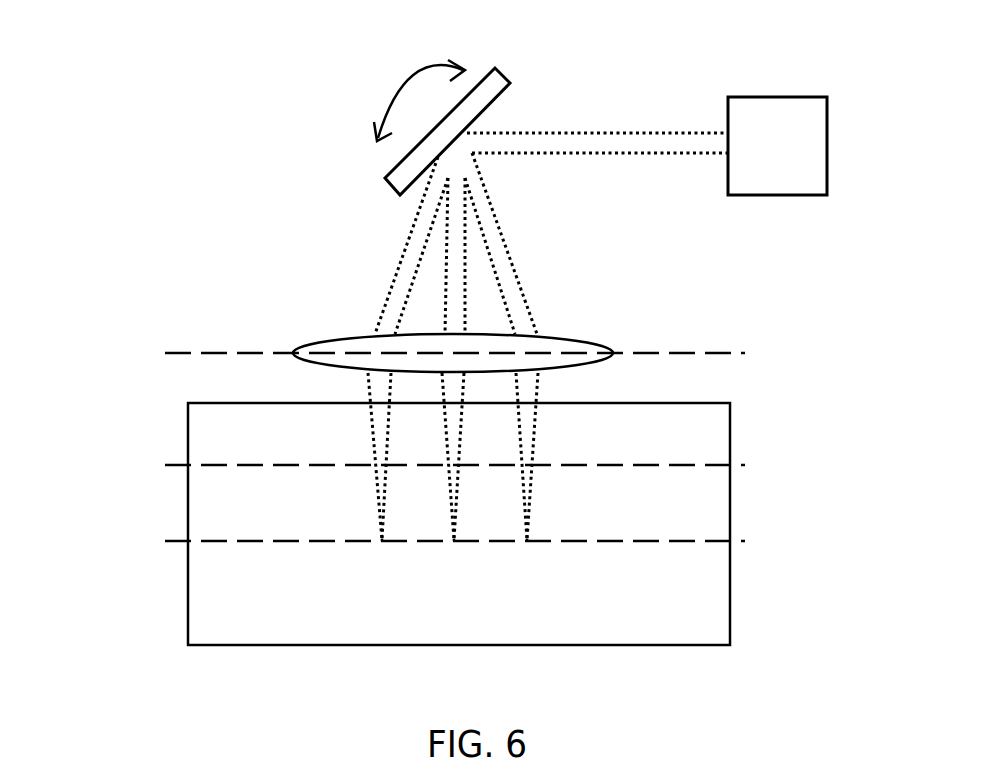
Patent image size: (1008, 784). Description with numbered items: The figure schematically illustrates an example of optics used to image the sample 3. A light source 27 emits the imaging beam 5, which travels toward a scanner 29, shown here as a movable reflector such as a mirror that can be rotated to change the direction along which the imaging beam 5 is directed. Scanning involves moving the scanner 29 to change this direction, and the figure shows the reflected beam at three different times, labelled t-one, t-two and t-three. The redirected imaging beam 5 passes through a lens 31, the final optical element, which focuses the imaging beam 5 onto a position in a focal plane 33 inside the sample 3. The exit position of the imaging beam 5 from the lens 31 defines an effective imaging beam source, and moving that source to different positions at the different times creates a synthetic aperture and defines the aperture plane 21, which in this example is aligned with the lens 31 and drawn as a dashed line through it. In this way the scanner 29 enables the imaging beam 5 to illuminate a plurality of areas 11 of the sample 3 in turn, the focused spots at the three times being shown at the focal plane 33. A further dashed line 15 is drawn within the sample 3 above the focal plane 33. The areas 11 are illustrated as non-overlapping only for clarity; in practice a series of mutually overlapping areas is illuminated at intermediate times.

The sample 3 is at (178, 610).
The imaging beam 5 is at (637, 160).
The areas 11 is at (372, 472).
The sample surface 15 is at (758, 452).
The aperture plane 21 is at (158, 345).
The light source 27 is at (783, 210).
The scanner 29 is at (517, 80).
The lens 31 is at (292, 342).
The focal plane 33 is at (758, 527).